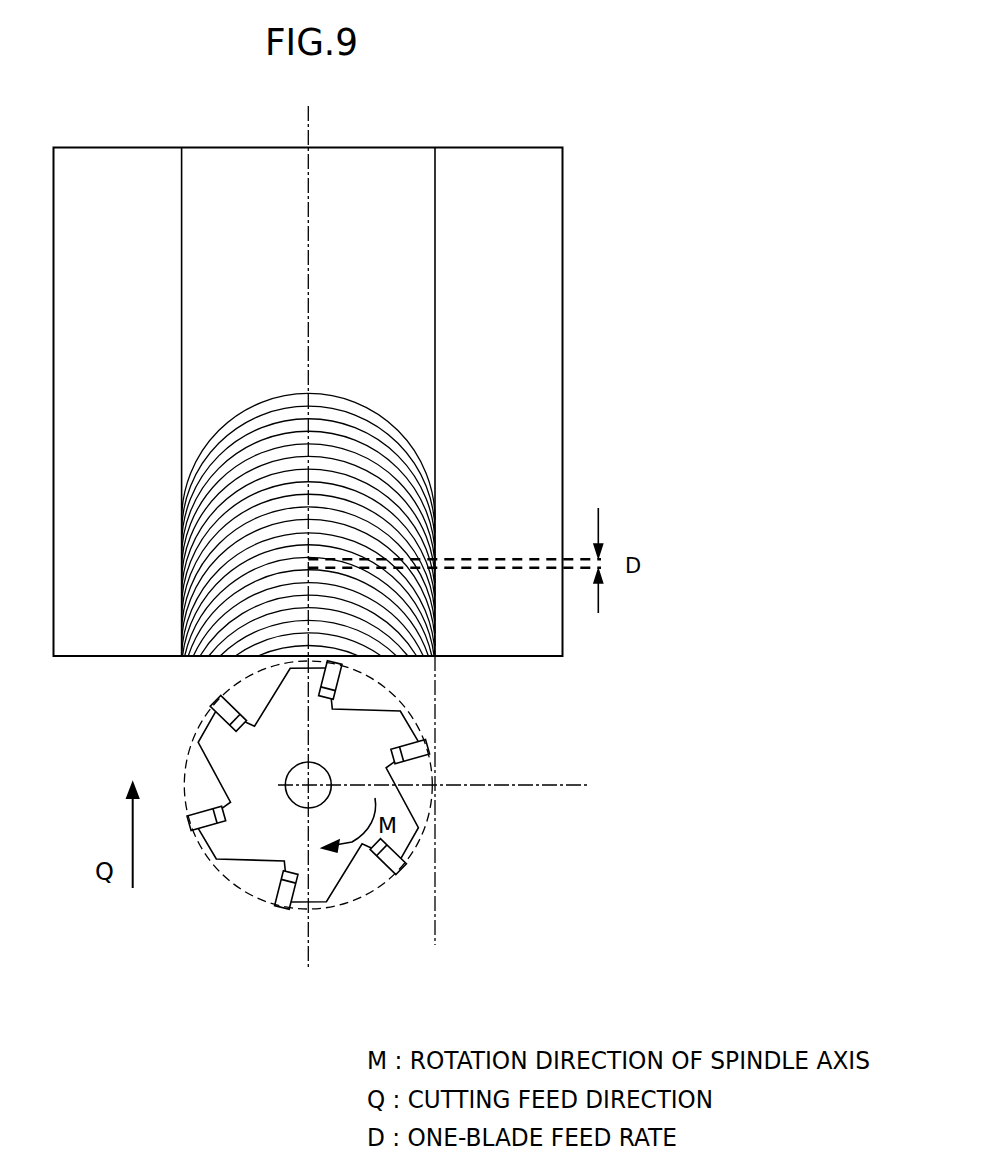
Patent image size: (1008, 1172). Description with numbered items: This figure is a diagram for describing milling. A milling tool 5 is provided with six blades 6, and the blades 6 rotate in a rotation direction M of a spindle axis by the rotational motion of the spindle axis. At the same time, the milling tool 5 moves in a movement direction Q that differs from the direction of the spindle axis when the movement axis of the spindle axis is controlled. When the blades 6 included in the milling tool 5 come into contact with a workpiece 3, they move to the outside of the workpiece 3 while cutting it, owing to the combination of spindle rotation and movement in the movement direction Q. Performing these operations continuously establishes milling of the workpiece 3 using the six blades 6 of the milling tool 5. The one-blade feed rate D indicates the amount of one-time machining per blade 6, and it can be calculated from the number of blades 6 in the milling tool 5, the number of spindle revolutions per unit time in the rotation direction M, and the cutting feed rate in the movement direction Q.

The workpiece 3 is at (527, 275).
The milling tool 5 is at (413, 823).
The blades 6 is at (393, 870).